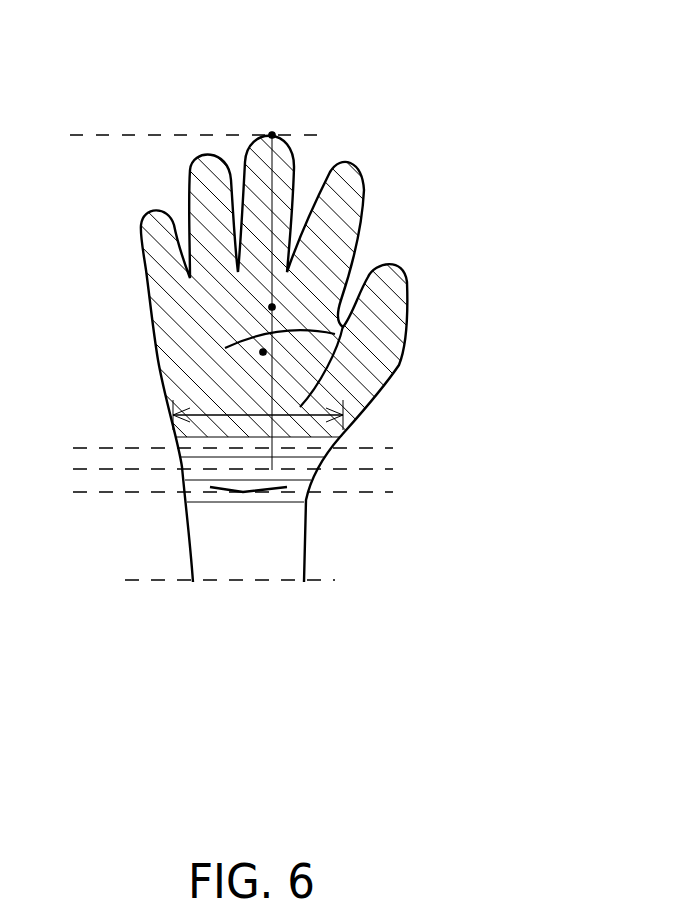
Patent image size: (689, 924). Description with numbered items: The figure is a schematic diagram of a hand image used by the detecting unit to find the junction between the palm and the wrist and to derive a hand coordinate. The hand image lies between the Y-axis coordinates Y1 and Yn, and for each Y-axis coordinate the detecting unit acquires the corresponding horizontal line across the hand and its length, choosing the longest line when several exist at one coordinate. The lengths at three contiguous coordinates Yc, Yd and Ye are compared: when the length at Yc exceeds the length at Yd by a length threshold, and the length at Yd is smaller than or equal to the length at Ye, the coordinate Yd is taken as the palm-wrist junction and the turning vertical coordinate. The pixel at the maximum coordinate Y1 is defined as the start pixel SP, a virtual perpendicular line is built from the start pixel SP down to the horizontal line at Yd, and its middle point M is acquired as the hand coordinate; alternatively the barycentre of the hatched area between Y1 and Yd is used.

The start pixel SP is at (272, 132).
The Y-axis coordinate Y1 is at (181, 125).
The middle point M is at (287, 306).
The palm center point H is at (250, 367).
The Y-axis coordinate Yc is at (213, 433).
The Y-axis coordinate Yd is at (213, 467).
The Y-axis coordinate Ye is at (213, 498).
The Y-axis coordinate Yn is at (184, 570).